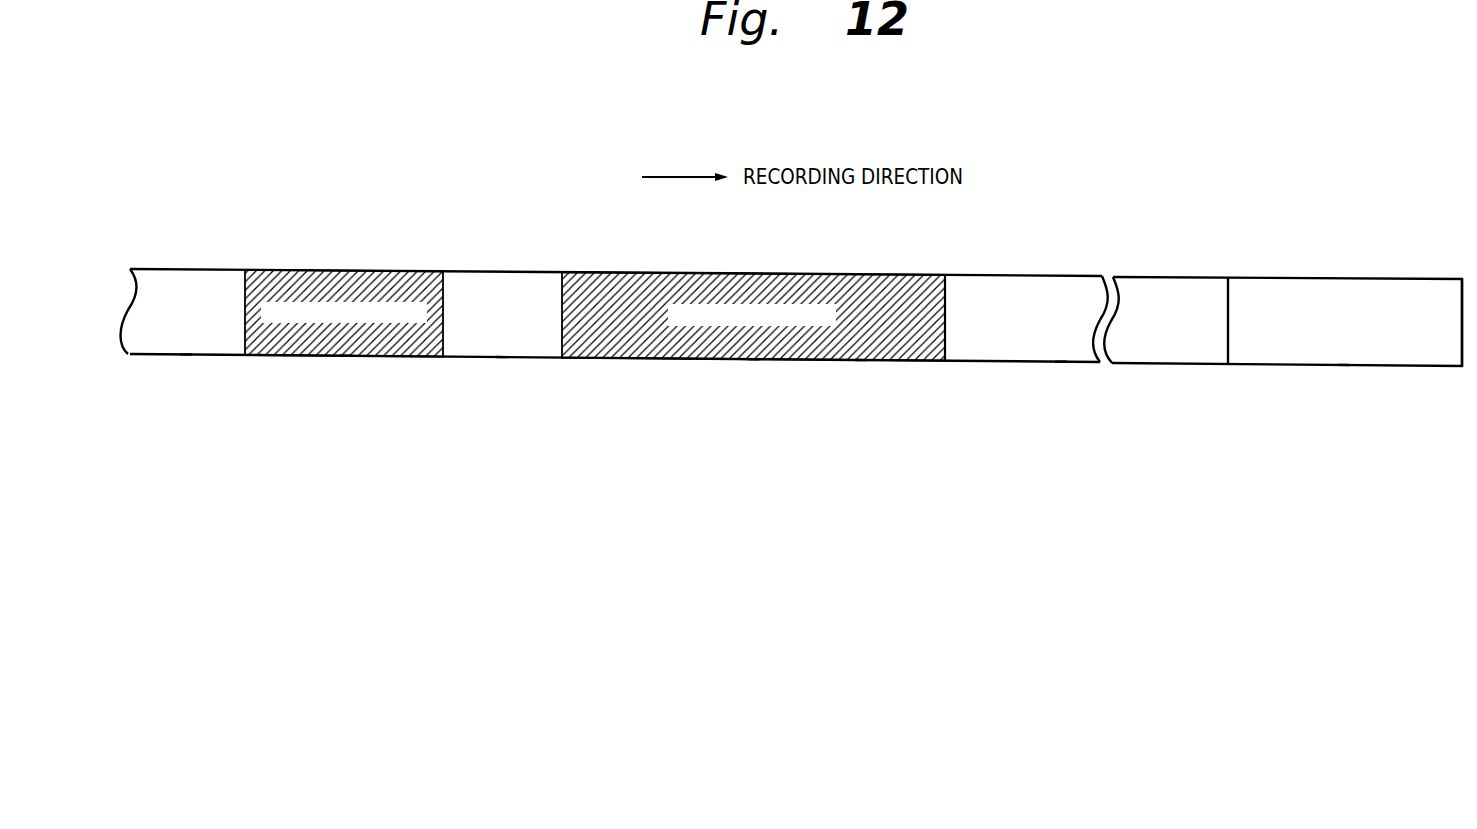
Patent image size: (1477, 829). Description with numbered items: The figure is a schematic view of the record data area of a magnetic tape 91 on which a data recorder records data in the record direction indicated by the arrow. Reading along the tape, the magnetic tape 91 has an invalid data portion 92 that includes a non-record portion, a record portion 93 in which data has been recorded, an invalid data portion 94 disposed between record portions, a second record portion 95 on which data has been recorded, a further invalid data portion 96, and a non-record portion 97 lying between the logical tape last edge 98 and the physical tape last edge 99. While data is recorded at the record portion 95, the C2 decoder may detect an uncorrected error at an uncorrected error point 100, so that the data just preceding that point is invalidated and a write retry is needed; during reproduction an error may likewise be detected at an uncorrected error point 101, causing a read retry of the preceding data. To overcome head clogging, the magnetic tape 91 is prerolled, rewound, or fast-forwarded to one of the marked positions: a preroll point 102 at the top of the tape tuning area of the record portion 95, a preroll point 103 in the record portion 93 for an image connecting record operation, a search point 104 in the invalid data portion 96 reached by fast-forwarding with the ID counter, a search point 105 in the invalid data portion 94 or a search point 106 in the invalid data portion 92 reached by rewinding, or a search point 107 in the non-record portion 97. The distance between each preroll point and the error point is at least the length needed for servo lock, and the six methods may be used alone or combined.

The magnetic tape 91 is at (264, 200).
The invalid data portion 92 is at (193, 268).
The record portion 93 is at (341, 269).
The invalid data portion 94 is at (506, 270).
The record portion 95 is at (756, 274).
The invalid data portion 96 is at (1041, 275).
The non-record portion 97 is at (1345, 278).
The logical tape last edge 98 is at (1228, 371).
The physical tape last edge 99 is at (1459, 373).
The uncorrected error point 100 is at (944, 367).
The uncorrected error point 101 is at (861, 366).
The preroll point 102 is at (753, 367).
The preroll point 103 is at (345, 364).
The search point 104 is at (1061, 369).
The search point 105 is at (502, 365).
The search point 106 is at (186, 362).
The search point 107 is at (1343, 373).